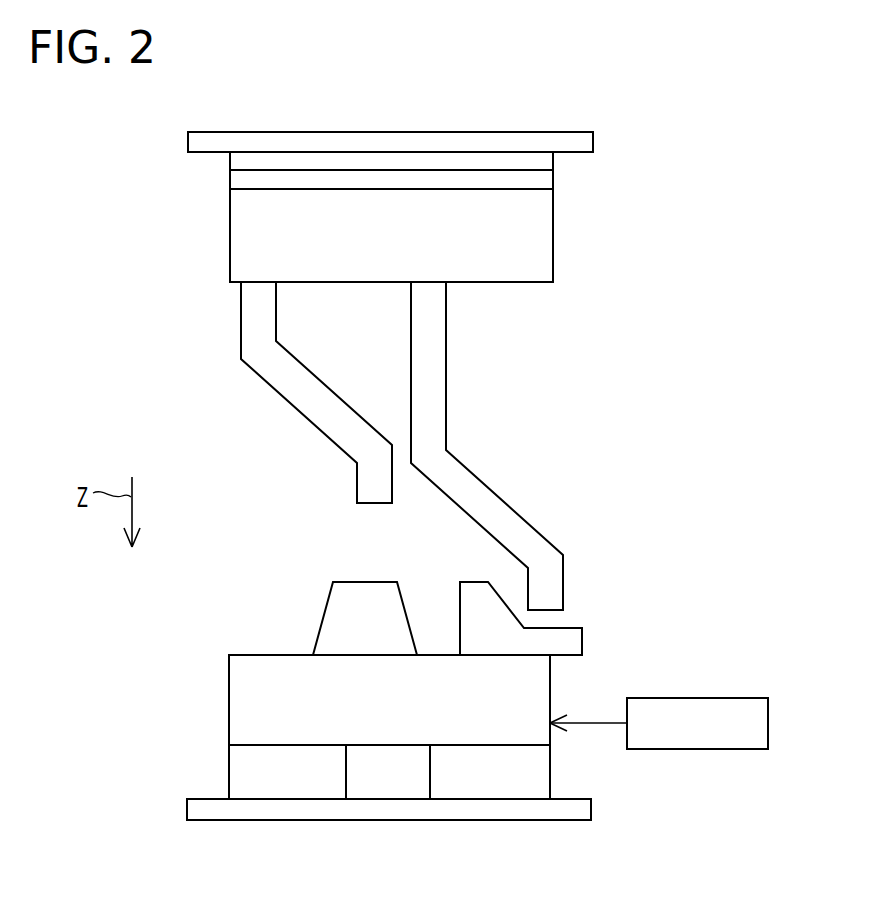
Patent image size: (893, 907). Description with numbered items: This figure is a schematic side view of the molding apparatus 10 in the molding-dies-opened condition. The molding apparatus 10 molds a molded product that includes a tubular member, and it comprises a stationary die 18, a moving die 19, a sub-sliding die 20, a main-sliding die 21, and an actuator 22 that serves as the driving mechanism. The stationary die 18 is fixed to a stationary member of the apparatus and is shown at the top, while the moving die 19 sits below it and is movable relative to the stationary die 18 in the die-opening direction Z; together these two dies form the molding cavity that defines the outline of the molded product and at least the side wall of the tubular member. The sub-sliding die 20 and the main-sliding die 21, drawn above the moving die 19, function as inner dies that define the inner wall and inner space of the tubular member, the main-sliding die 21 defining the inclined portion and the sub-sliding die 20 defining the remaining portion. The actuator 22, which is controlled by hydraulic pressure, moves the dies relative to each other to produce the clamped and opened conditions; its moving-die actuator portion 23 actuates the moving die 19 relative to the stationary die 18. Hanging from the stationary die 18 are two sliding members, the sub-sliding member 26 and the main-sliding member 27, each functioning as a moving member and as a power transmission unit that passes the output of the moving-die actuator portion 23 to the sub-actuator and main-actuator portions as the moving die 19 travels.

The molding apparatus 10 is at (606, 107).
The stationary die 18 is at (222, 228).
The moving die 19 is at (221, 705).
The sub-sliding die 20 is at (330, 610).
The main-sliding die 21 is at (568, 638).
The actuator 22 is at (703, 750).
The moving-die actuator portion 23 is at (697, 723).
The sub-sliding member 26 is at (246, 322).
The main-sliding member 27 is at (435, 335).